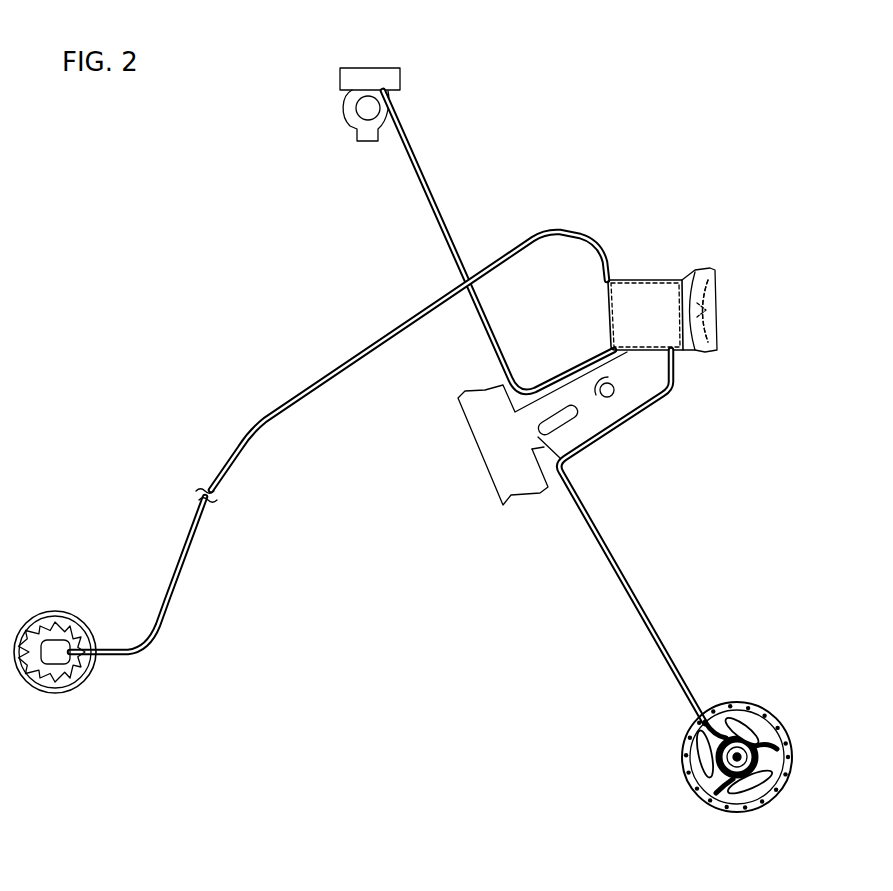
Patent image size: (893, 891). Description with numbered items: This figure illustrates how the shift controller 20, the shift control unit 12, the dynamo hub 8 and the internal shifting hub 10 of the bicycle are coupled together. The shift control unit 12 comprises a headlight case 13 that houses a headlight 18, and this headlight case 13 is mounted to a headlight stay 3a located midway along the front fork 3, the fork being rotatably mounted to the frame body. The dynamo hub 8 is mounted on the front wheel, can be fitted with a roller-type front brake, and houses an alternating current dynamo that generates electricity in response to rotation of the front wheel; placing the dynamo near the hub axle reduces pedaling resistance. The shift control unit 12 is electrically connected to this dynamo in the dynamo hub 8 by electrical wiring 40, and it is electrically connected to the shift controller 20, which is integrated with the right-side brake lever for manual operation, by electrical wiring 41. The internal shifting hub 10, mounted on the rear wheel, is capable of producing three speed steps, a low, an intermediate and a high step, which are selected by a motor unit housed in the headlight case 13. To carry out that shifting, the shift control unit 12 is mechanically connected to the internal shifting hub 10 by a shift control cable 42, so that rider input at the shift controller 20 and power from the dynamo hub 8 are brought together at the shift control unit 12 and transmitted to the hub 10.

The front fork 3 is at (498, 490).
The headlight stay 3a is at (562, 463).
The dynamo hub 8 is at (740, 707).
The internal shifting hub 10 is at (83, 680).
The shift control unit 12 is at (630, 280).
The headlight case 13 is at (650, 292).
The headlight 18 is at (720, 283).
The shift controller 20 is at (393, 80).
The electrical wiring 40 is at (627, 588).
The electrical wiring 41 is at (430, 192).
The shift control cable 42 is at (380, 348).